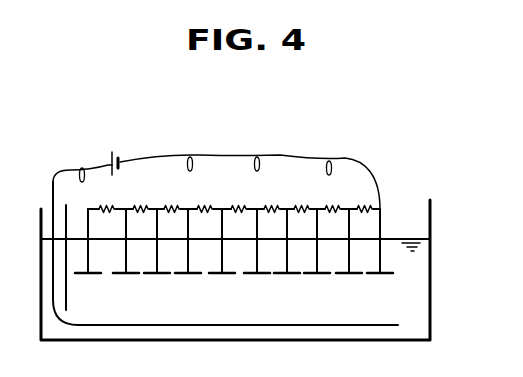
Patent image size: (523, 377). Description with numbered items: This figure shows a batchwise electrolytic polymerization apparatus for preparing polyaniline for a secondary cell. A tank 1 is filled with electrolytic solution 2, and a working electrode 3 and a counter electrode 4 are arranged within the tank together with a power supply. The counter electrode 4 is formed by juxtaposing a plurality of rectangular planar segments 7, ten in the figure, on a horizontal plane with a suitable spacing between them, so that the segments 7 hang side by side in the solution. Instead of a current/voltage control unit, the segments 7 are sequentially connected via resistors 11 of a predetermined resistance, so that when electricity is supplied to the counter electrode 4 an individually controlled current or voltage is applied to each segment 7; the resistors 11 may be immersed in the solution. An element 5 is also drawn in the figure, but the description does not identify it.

The tank 1 is at (431, 223).
The electrolytic solution 2 is at (418, 272).
The working electrode 3 is at (388, 323).
The counter electrode 4 is at (253, 233).
The counter electrode rod 5 is at (68, 211).
The rectangular planar segments 7 is at (162, 276).
The resistors 11 is at (265, 203).